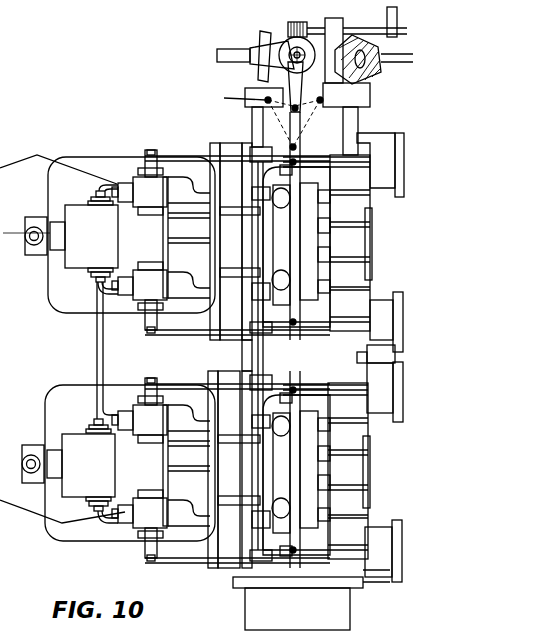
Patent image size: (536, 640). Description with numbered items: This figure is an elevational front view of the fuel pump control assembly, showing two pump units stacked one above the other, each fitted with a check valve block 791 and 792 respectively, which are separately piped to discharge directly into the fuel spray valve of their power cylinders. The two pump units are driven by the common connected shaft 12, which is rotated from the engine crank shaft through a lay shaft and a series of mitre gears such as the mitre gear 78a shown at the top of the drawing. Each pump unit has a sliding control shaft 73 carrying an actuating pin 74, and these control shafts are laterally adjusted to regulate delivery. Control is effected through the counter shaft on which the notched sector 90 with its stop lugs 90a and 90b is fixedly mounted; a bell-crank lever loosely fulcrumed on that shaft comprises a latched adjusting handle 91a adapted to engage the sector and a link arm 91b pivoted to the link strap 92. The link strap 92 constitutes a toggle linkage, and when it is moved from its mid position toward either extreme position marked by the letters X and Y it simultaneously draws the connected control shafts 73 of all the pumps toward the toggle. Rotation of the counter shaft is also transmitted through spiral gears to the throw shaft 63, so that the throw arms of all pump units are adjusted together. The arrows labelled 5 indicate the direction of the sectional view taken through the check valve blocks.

The notched sector 90 is at (268, 34).
The stop lug 90a is at (265, 76).
The stop lug 90b is at (263, 40).
The latched adjusting handle 91a is at (218, 50).
The link arm 91b is at (258, 108).
The link strap 92 is at (297, 147).
The mitre gear 78a is at (370, 84).
The actuating pin 74 is at (330, 168).
The control shaft 73 is at (273, 492).
The connected shaft 12 is at (357, 365).
The throw shaft 63 is at (240, 344).
The check valve block 791 is at (62, 440).
The check valve block 792 is at (77, 248).
The section view indicator 5 is at (8, 220).